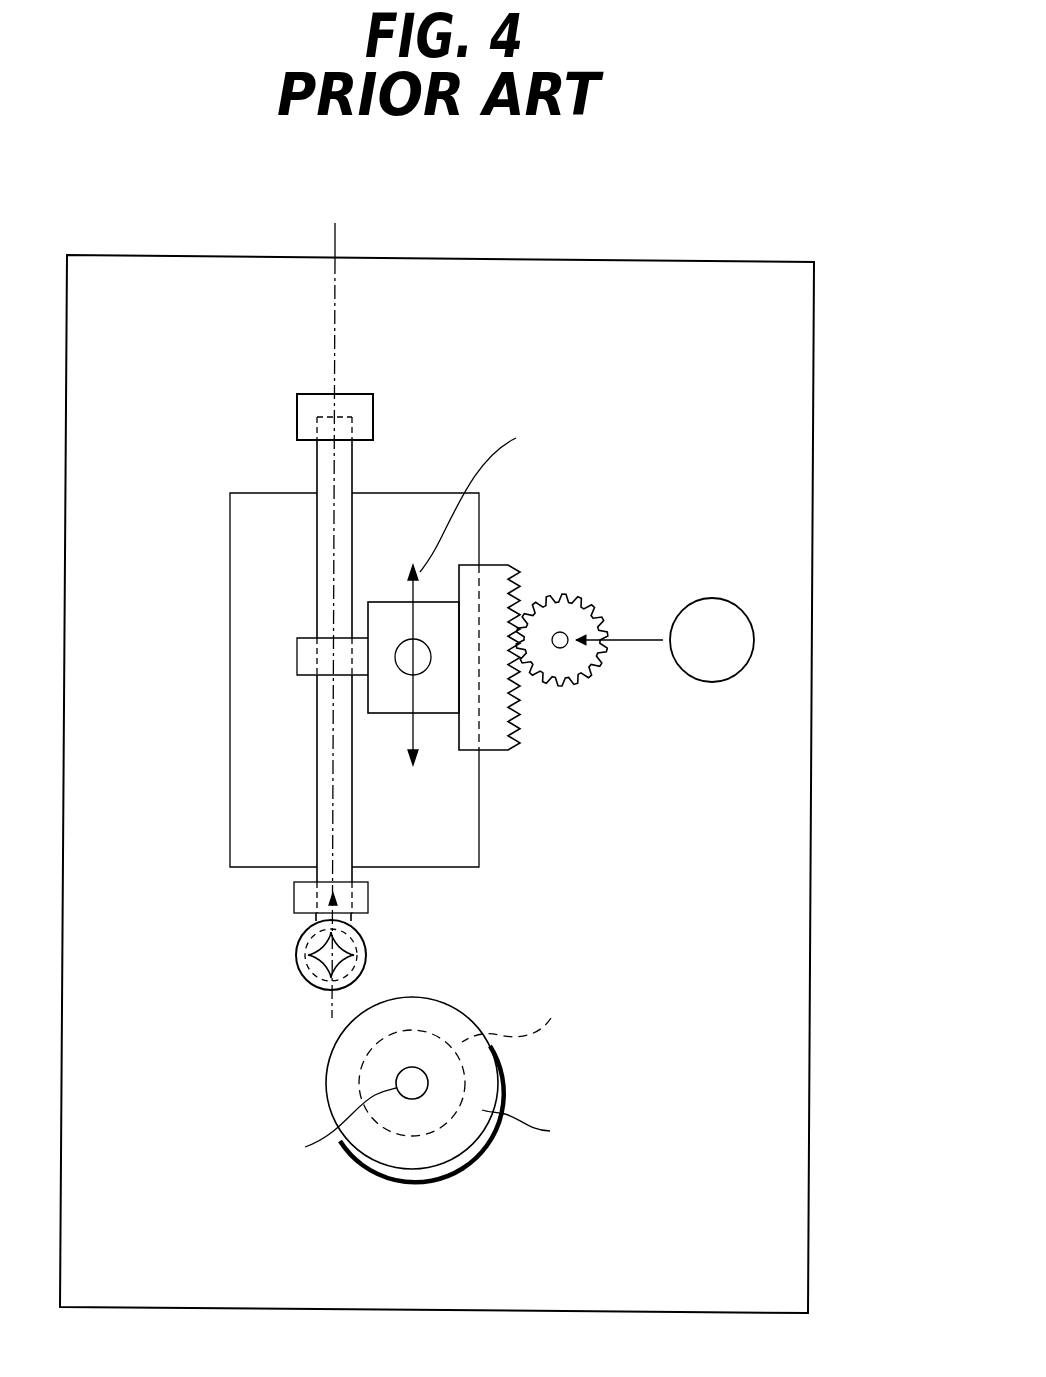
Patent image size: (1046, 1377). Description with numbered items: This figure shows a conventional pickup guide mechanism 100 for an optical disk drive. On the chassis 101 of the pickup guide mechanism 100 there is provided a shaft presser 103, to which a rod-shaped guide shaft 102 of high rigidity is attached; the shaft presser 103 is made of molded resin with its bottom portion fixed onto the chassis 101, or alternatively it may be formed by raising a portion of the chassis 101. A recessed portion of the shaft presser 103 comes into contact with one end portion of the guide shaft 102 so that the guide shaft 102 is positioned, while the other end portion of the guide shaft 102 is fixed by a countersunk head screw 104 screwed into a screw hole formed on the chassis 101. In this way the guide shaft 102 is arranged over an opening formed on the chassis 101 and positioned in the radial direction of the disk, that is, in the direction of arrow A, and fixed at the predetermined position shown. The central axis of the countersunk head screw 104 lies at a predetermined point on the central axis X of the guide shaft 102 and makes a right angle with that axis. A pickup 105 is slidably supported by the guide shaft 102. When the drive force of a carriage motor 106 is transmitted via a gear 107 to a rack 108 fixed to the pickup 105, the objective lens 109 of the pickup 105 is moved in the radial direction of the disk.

The pickup guide mechanism 100 is at (836, 386).
The chassis 101 is at (654, 280).
The guide shaft 102 is at (345, 462).
The shaft presser 103 is at (355, 398).
The countersunk head screw 104 is at (297, 952).
The pickup 105 is at (397, 705).
The carriage motor 106 is at (712, 598).
The gear 107 is at (575, 598).
The rack 108 is at (497, 570).
The objective lens 109 is at (403, 668).